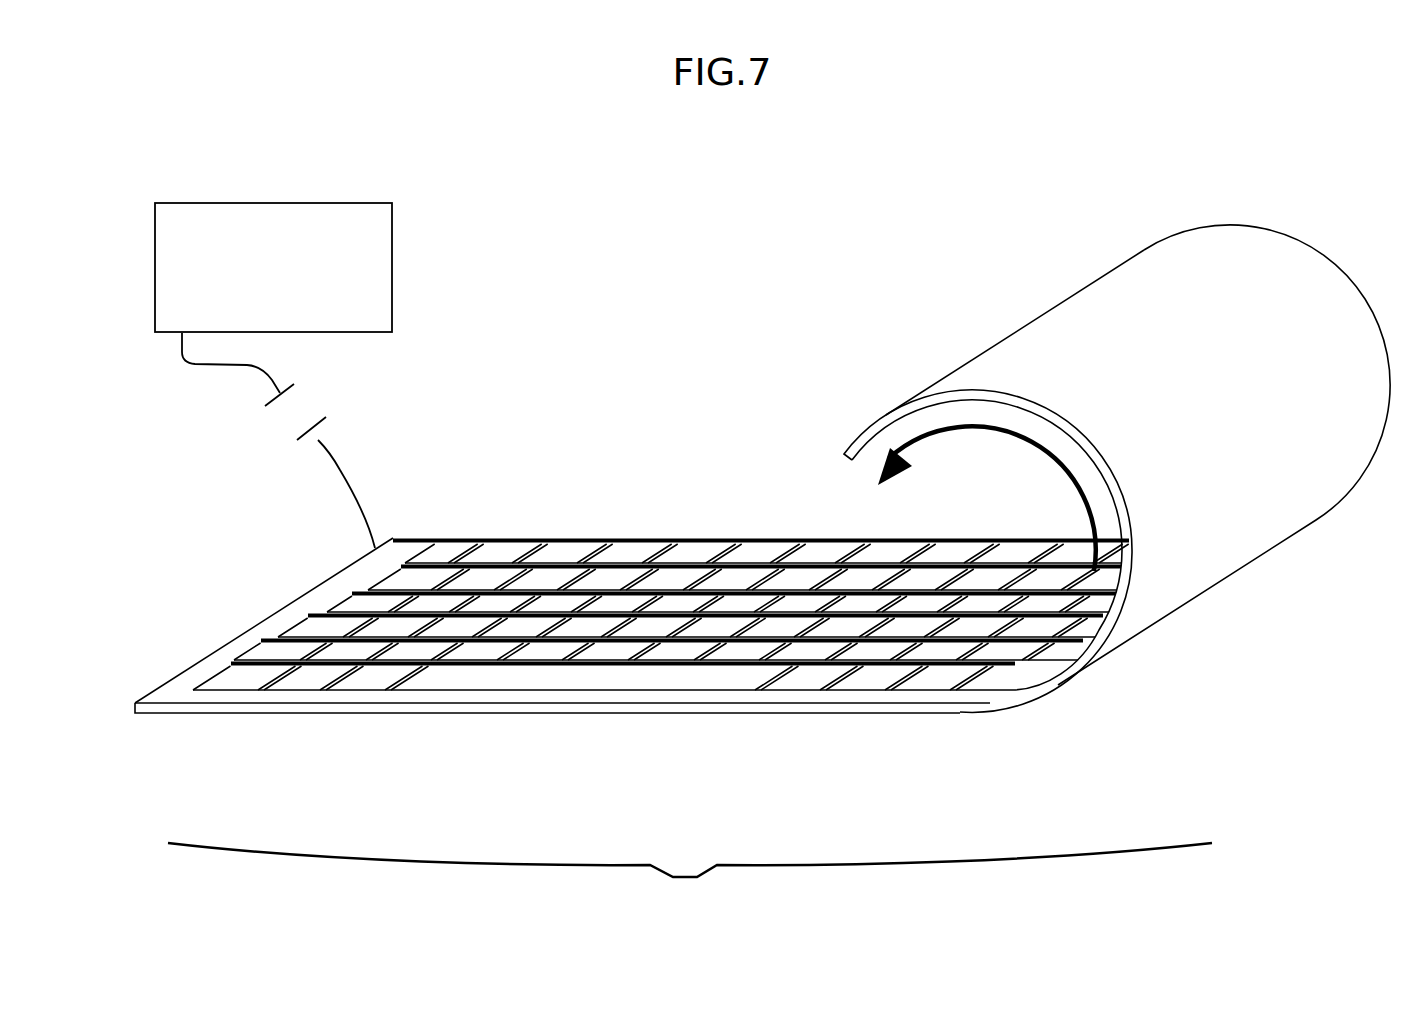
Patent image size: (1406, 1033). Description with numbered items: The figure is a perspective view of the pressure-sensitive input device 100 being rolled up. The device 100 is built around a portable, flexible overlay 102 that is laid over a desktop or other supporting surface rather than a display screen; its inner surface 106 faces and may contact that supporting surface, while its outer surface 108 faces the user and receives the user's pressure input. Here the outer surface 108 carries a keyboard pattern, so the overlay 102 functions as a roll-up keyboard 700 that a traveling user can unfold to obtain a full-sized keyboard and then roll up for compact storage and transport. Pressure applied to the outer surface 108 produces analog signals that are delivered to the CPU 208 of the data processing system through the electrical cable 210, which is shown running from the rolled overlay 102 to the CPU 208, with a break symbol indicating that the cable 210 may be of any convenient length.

The pressure-sensitive input device 100 is at (1116, 221).
The overlay 102 is at (213, 647).
The inner surface 106 is at (278, 715).
The outer surface 108 is at (402, 540).
The CPU 208 is at (378, 203).
The electrical cable 210 is at (318, 440).
The roll-up keyboard 700 is at (690, 888).